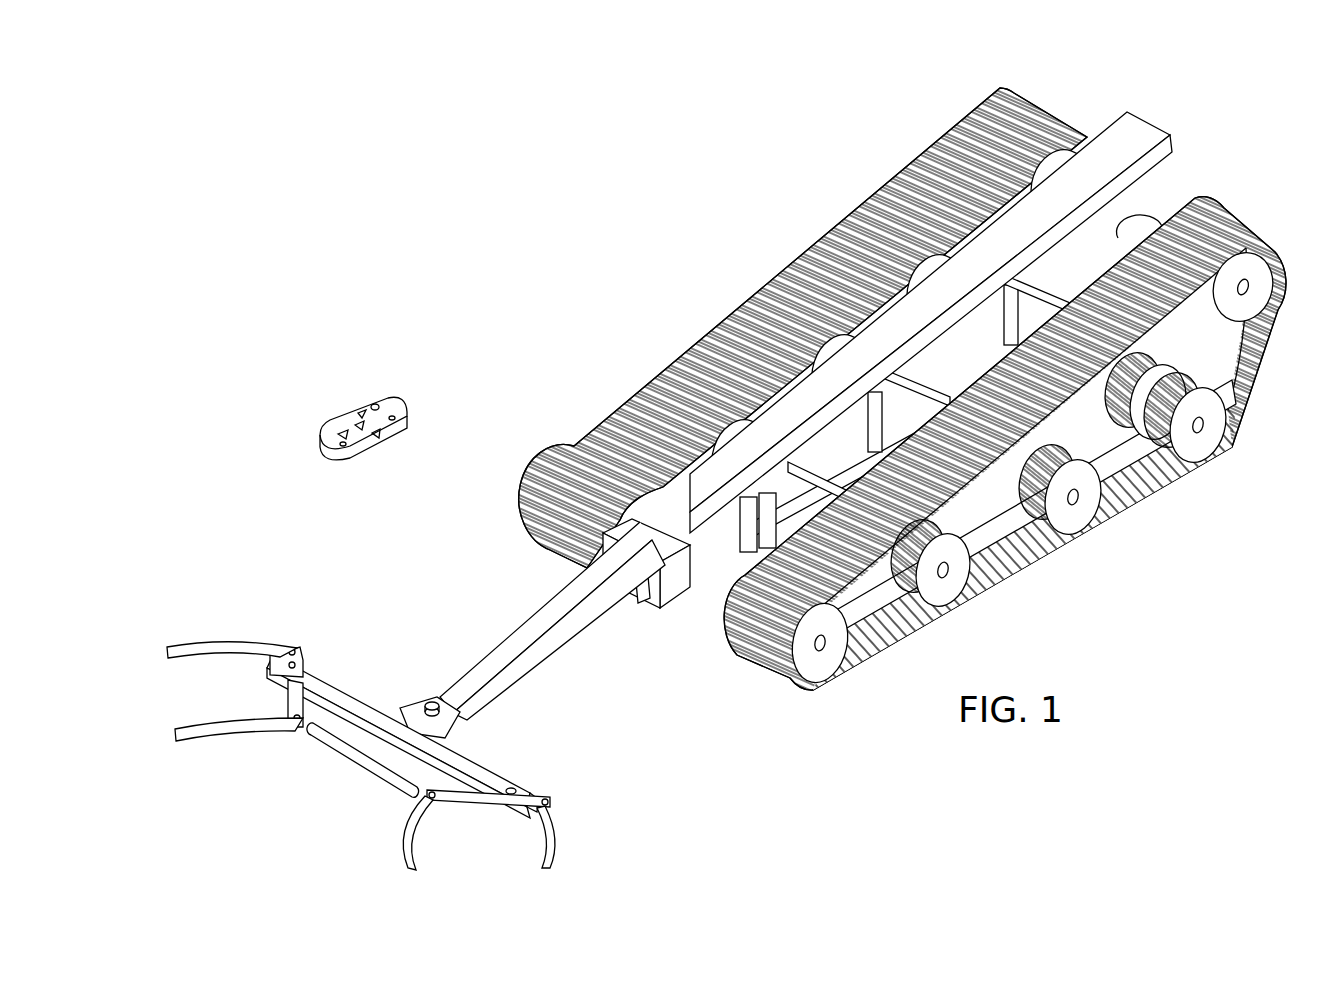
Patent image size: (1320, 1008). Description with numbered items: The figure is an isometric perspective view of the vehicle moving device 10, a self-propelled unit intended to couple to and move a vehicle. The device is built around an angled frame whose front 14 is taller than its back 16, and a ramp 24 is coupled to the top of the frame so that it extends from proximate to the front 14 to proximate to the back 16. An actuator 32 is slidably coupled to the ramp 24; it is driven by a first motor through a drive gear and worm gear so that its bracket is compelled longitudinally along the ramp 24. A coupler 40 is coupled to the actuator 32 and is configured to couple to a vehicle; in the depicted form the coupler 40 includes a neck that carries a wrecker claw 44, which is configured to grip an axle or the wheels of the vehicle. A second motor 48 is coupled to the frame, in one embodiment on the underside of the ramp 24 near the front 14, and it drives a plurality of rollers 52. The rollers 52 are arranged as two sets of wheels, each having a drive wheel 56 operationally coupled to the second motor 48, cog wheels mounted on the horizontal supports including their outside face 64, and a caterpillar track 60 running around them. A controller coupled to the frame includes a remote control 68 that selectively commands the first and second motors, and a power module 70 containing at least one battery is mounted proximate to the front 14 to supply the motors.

The vehicle moving device 10 is at (580, 201).
The front 14 is at (1150, 203).
The back 16 is at (664, 612).
The ramp 24 is at (1115, 140).
The actuator 32 is at (643, 602).
The coupler 40 is at (525, 638).
The wrecker claw 44 is at (352, 692).
The second motor 48 is at (1125, 235).
The rollers 52 is at (1137, 397).
The drive wheel 56 is at (1255, 278).
The caterpillar track 60 is at (815, 272).
The outside face 64 is at (997, 523).
The remote control 68 is at (360, 412).
The power module 70 is at (1158, 210).